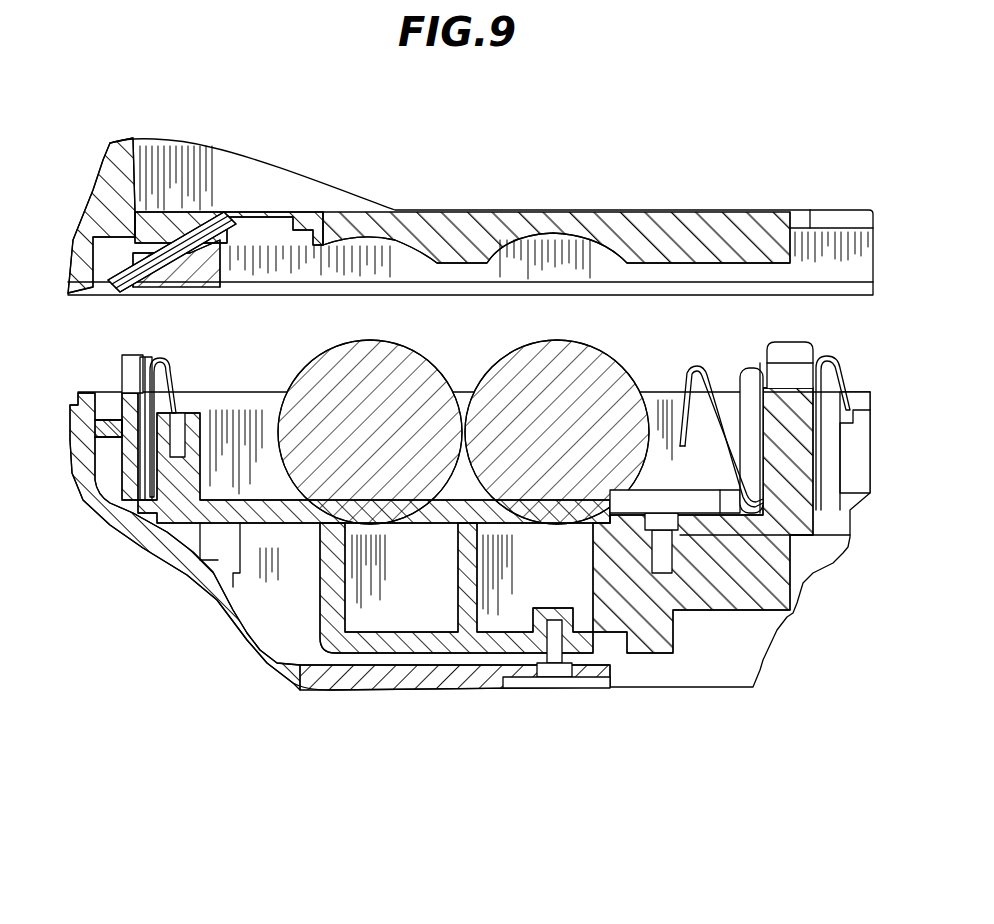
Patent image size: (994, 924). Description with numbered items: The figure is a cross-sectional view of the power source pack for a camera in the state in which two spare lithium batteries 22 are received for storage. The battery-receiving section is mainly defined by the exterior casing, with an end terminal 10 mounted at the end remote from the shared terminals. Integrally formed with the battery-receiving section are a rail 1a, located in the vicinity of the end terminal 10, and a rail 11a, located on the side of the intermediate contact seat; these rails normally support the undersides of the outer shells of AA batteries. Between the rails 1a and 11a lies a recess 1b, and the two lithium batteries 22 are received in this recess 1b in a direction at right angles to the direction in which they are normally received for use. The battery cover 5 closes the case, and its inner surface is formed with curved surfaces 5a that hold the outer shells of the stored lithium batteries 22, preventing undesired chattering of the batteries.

The battery cover 5 is at (490, 210).
The curved surfaces 5a is at (583, 243).
The end terminal 10 is at (158, 357).
The rail 1a is at (207, 487).
The lithium battery 22 is at (467, 508).
The recess 1b is at (440, 530).
The rail 11a is at (700, 512).